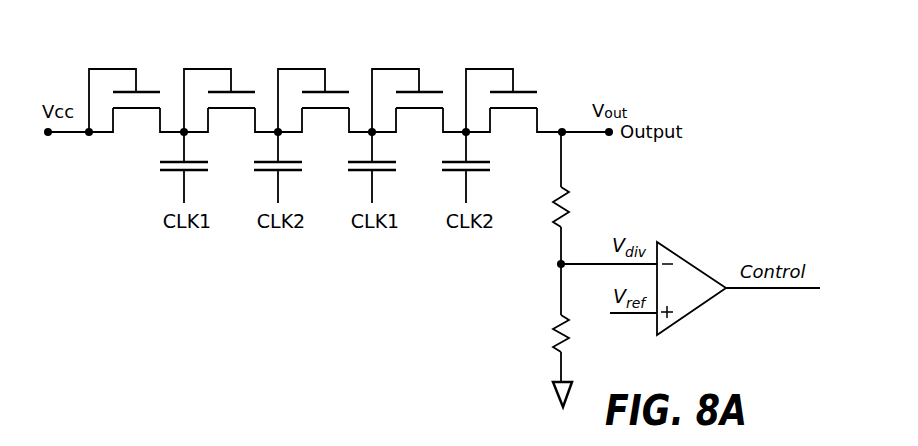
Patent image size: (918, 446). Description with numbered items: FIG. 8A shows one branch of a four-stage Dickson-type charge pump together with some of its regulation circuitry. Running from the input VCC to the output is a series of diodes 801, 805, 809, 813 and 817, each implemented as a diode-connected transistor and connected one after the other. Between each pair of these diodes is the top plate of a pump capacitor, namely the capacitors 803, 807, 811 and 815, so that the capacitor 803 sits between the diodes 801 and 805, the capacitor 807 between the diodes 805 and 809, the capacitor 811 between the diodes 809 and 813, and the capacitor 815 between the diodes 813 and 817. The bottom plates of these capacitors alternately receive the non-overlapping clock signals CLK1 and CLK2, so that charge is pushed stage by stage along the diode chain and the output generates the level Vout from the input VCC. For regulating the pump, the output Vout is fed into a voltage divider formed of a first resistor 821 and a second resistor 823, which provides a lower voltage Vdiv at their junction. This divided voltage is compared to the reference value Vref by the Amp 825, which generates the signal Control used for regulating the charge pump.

The diode 801 is at (151, 90).
The diode 805 is at (246, 90).
The diode 809 is at (340, 90).
The diode 813 is at (434, 90).
The diode 817 is at (528, 90).
The capacitor 803 is at (173, 175).
The capacitor 807 is at (267, 175).
The capacitor 811 is at (361, 175).
The capacitor 815 is at (455, 175).
The resistor R1 821 is at (571, 203).
The resistor R2 823 is at (572, 331).
The Amp 825 is at (669, 248).